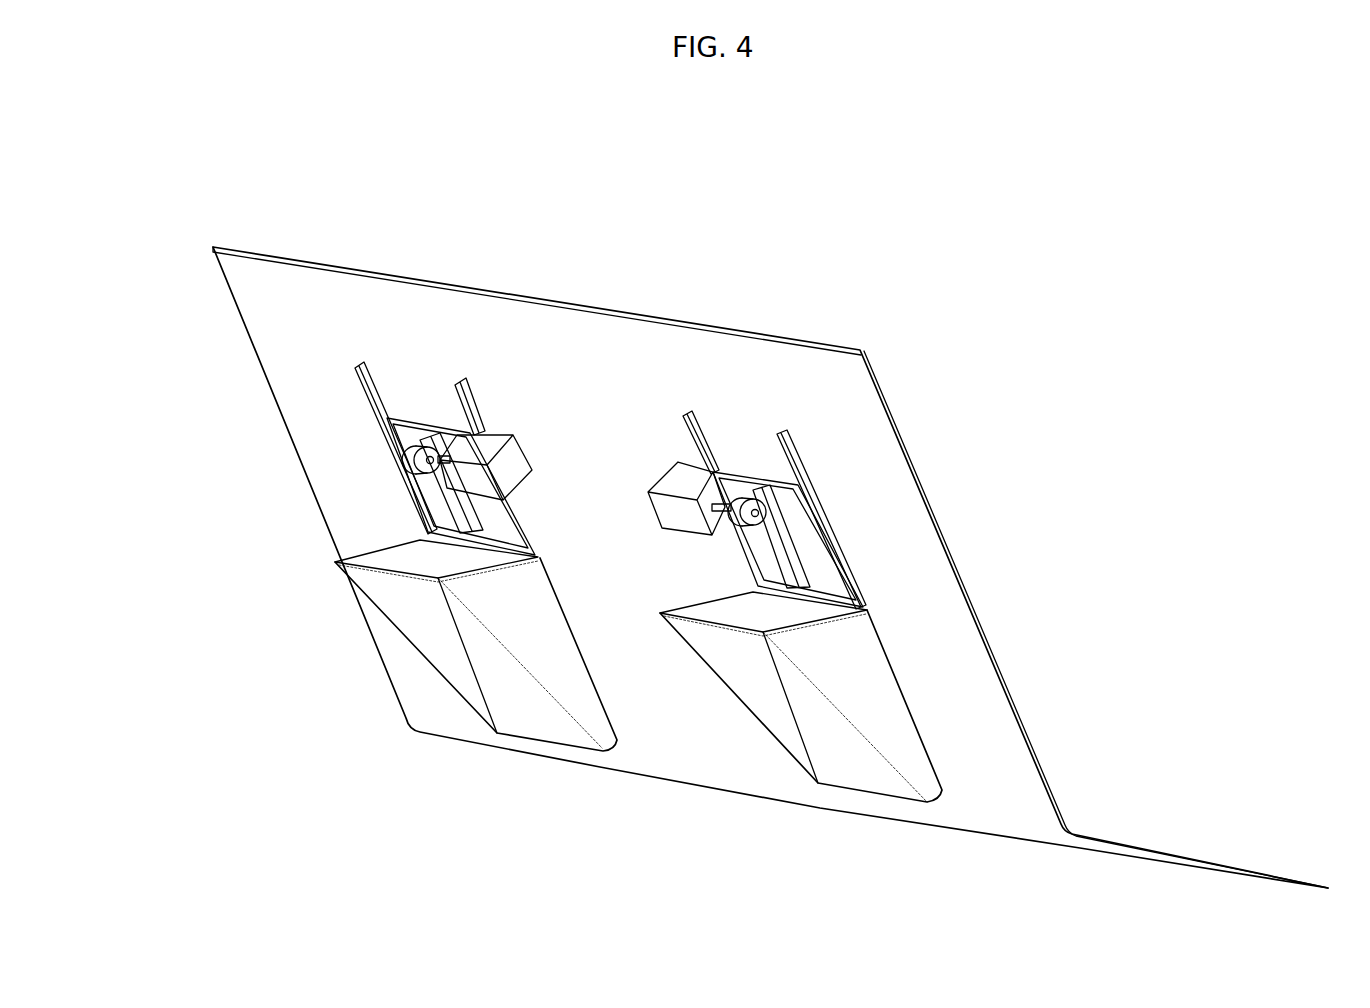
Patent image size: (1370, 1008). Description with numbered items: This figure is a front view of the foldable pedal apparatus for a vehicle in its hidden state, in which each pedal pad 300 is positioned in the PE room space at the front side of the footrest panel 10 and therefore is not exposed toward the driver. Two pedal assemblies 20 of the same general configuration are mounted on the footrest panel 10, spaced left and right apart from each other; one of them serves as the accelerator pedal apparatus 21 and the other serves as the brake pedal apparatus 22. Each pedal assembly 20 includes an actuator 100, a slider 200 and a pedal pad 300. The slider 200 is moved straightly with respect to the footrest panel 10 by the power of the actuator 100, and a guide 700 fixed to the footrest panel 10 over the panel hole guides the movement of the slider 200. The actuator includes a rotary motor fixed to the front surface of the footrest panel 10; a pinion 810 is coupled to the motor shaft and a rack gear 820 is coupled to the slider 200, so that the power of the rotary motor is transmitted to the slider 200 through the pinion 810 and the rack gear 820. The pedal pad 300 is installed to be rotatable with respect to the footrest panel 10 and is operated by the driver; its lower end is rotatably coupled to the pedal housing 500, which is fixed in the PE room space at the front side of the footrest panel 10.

The footrest panel 10 is at (843, 397).
The pedal assembly 20 is at (809, 786).
The accelerator pedal apparatus 21 is at (460, 700).
The brake pedal apparatus 22 is at (940, 773).
The actuator 100 is at (513, 467).
The slider 200 is at (540, 523).
The pedal pad 300 is at (413, 553).
The pedal housing 500 is at (453, 647).
The guide 700 is at (470, 378).
The pinion 810 is at (412, 462).
The rack gear 820 is at (457, 502).